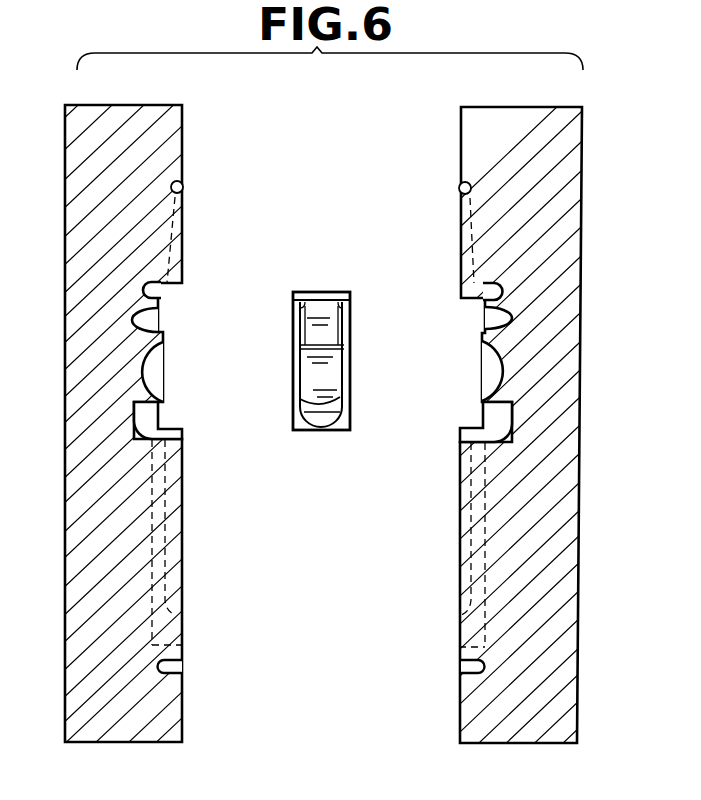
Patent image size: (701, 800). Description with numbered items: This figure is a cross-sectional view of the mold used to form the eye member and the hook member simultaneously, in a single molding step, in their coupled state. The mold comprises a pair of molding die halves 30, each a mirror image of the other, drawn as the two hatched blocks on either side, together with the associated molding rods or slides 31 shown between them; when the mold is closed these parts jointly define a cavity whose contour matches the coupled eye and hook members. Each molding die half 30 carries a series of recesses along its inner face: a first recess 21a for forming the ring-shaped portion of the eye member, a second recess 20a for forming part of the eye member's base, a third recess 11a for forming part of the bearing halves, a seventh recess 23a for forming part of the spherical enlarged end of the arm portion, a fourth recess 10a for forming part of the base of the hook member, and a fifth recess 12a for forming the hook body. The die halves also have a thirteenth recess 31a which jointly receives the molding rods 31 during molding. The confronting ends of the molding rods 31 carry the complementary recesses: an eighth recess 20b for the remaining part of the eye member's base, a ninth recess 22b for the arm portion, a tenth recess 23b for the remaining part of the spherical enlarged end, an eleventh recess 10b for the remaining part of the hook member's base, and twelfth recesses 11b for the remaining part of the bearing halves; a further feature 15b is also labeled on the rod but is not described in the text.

The molding die half 30 is at (128, 105).
The first recess 21a is at (190, 205).
The second recess 20a is at (185, 282).
The third recess 11a is at (148, 322).
The seventh recess 23a is at (153, 357).
The fourth recess 10a is at (185, 443).
The thirteenth recess 31a is at (165, 417).
The fifth recess 12a is at (172, 668).
The eleventh recess 10b is at (322, 422).
The molding rod 31 is at (312, 288).
The eighth recess 20b is at (337, 302).
The ninth recess 22b is at (323, 335).
The twelfth recess 11b is at (298, 377).
The elastic piece 15b is at (293, 393).
The tenth recess 23b is at (343, 393).